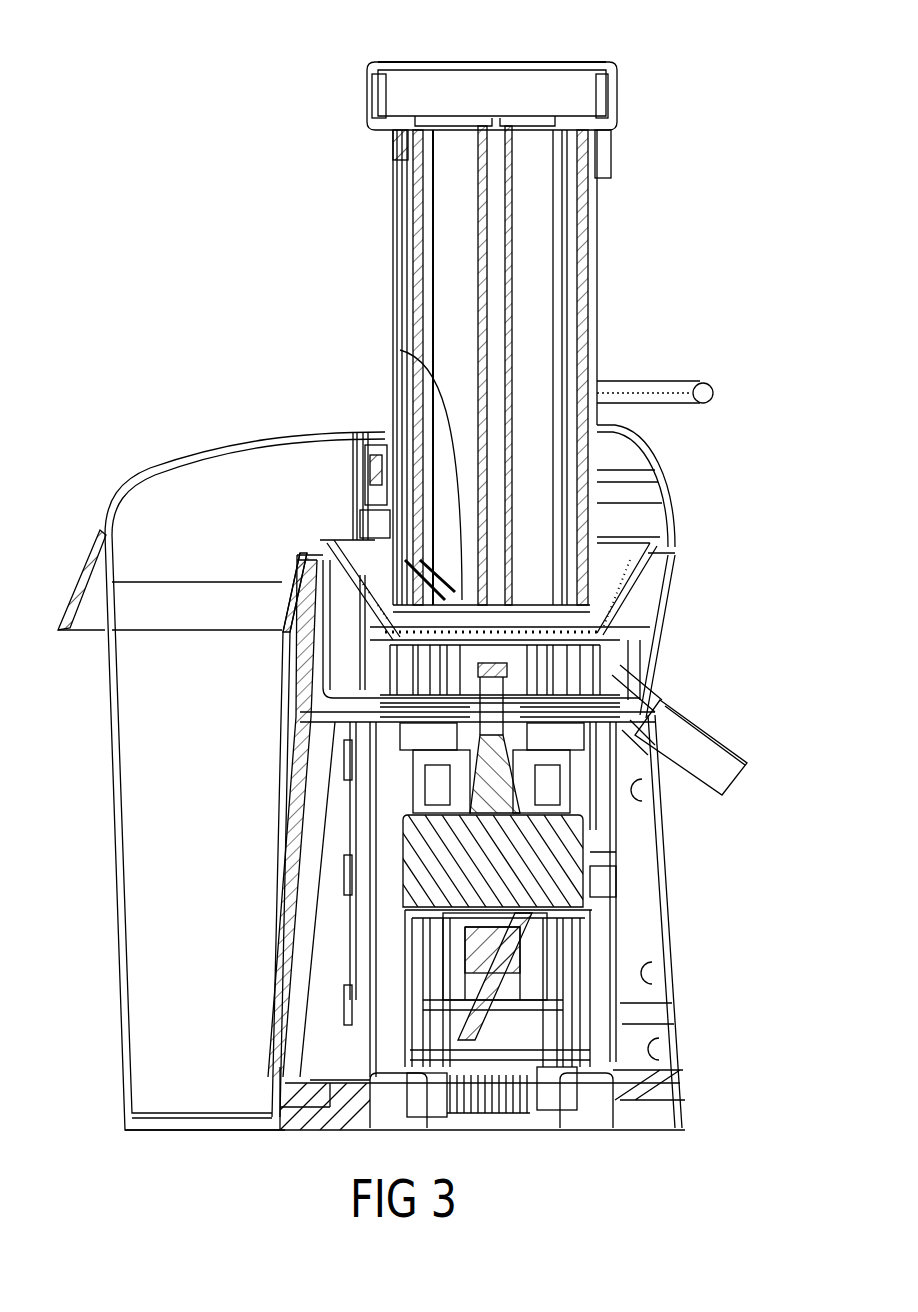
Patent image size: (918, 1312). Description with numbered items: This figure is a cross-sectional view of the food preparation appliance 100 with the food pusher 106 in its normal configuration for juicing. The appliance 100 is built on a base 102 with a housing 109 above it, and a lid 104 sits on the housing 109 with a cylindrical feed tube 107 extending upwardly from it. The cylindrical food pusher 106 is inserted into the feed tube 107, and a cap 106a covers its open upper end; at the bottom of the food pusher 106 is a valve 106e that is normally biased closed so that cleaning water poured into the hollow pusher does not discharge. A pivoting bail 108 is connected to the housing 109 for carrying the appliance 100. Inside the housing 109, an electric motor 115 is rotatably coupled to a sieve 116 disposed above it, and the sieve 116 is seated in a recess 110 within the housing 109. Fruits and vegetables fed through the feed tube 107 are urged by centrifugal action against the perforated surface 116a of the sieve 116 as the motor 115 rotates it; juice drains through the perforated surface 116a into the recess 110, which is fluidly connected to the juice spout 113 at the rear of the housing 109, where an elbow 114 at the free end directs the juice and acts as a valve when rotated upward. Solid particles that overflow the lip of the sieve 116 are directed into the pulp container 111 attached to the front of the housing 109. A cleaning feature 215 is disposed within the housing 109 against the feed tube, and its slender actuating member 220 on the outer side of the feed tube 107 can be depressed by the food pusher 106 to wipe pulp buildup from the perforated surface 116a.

The food preparation appliance 100 is at (740, 27).
The base 102 is at (600, 1130).
The lid 104 is at (175, 455).
The food pusher 106 is at (617, 110).
The cap 106a is at (490, 62).
The valve 106e is at (400, 350).
The feed tube 107 is at (598, 290).
The pivoting bail 108 is at (706, 385).
The housing 109 is at (668, 1000).
The recess 110 is at (655, 607).
The pulp container 111 is at (118, 992).
The juice spout 113 is at (660, 692).
The elbow 114 is at (700, 740).
The electric motor 115 is at (580, 852).
The sieve 116 is at (353, 530).
The perforated surface 116a is at (600, 610).
The cleaning feature 215 is at (368, 445).
The actuating member 220 is at (393, 143).